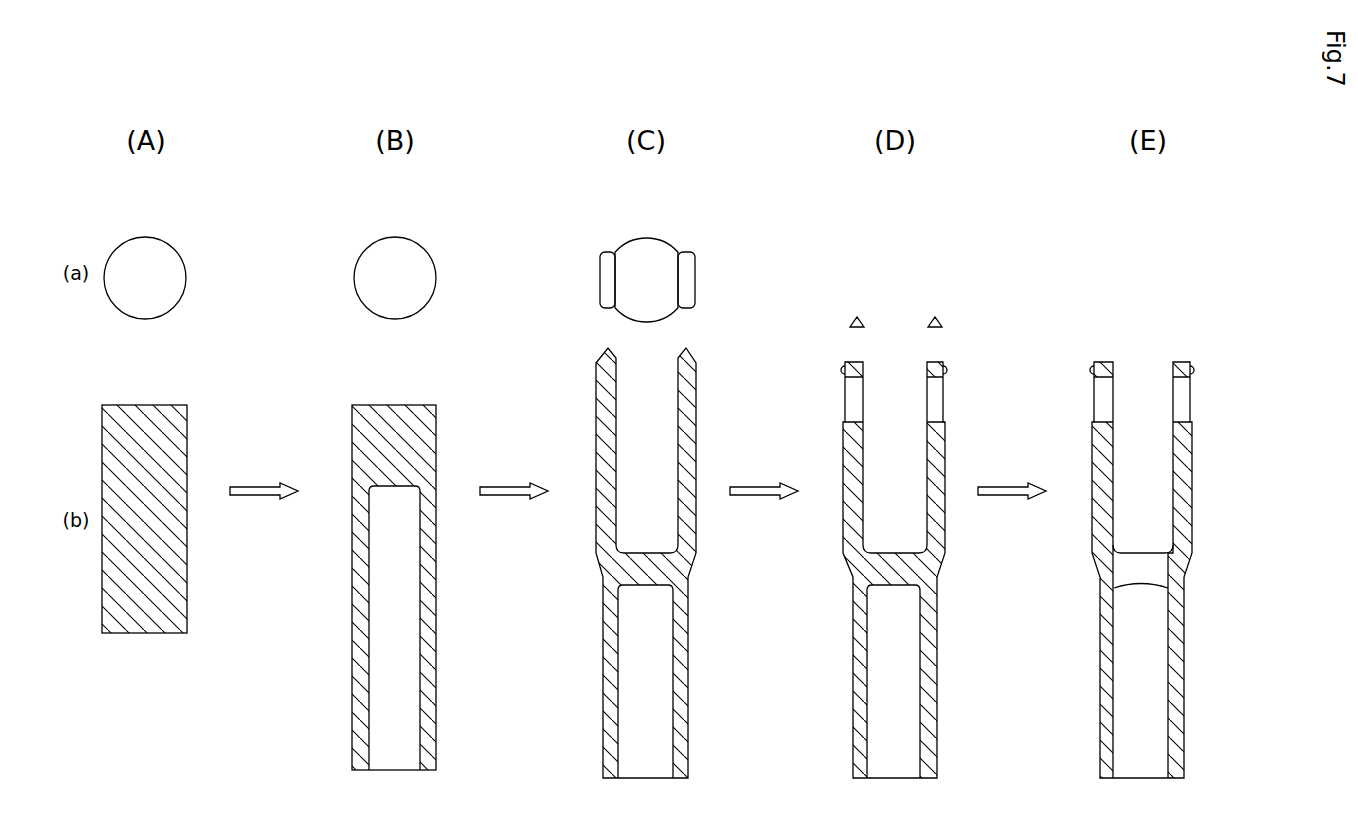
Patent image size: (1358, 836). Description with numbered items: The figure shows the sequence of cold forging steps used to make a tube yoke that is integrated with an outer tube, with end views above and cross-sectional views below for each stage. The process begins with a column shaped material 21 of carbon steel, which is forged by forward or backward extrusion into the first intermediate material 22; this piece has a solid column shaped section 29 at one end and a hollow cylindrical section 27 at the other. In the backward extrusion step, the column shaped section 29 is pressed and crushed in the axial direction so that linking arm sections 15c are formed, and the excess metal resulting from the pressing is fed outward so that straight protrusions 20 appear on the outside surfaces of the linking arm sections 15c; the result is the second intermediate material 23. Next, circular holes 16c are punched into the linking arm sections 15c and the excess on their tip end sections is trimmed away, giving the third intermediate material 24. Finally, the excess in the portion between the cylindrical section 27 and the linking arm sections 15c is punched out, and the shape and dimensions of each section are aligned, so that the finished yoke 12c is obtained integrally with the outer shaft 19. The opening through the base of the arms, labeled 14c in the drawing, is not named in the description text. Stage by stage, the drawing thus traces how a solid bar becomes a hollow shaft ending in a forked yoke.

In FIG. 7A, the column shaped material 21 is at (167, 288).
In FIG. 7B, the first intermediate material 22 is at (413, 272).
In FIG. 7B, the column shaped section 29 is at (365, 433).
In FIG. 7B, the cylindrical section 27 is at (425, 647).
In FIG. 7C, the protrusions 20 is at (600, 283).
In FIG. 7D, the protrusions 20 is at (946, 461).
In FIG. 7E, the protrusions 20 is at (1193, 445).
In FIG. 7C, the second intermediate material 23 is at (688, 296).
In FIG. 7D, the third intermediate material 24 is at (925, 572).
In FIG. 7D, the linking arm sections 15c is at (846, 363).
In FIG. 7E, the linking arm sections 15c is at (1095, 363).
In FIG. 7D, the circular holes 16c is at (937, 386).
In FIG. 7E, the circular holes 16c is at (1186, 390).
In FIG. 7E, the yoke 12c is at (1183, 490).
In FIG. 7E, the through hole 14c is at (1184, 572).
In FIG. 7E, the outer shaft 19 is at (1176, 730).